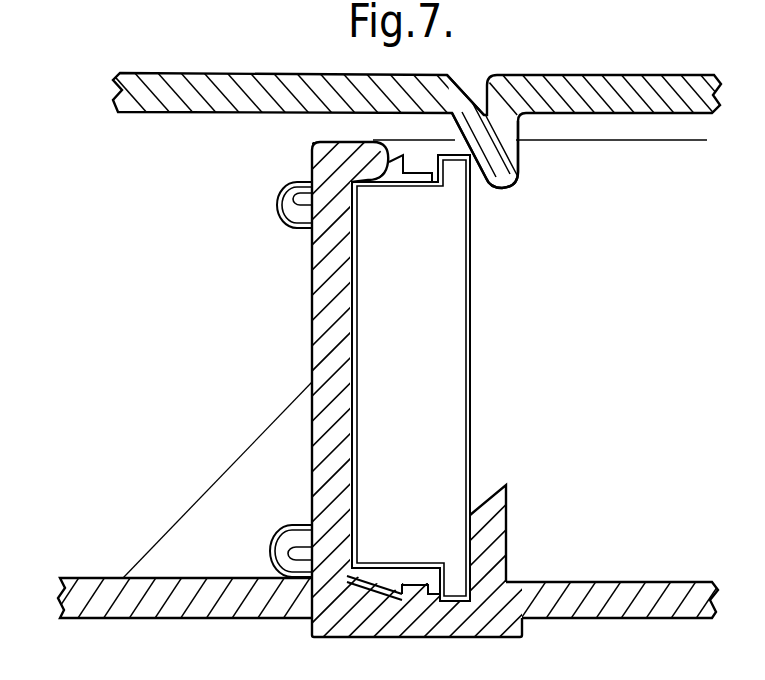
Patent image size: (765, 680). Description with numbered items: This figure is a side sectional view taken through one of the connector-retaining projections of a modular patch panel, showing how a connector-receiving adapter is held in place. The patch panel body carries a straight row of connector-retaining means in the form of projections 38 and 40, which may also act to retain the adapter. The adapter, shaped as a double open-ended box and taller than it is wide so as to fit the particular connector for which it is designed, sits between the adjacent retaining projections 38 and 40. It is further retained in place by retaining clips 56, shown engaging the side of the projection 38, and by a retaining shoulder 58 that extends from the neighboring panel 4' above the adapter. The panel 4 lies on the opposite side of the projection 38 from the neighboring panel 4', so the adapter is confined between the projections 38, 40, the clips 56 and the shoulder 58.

The panel 4 is at (373, 603).
The neighboring panel 4' is at (405, 129).
The connector-retaining projection 38 is at (325, 351).
The connector-retaining projection 40 is at (489, 518).
The retaining clip 56 is at (277, 204).
The retaining shoulder 58 is at (506, 188).